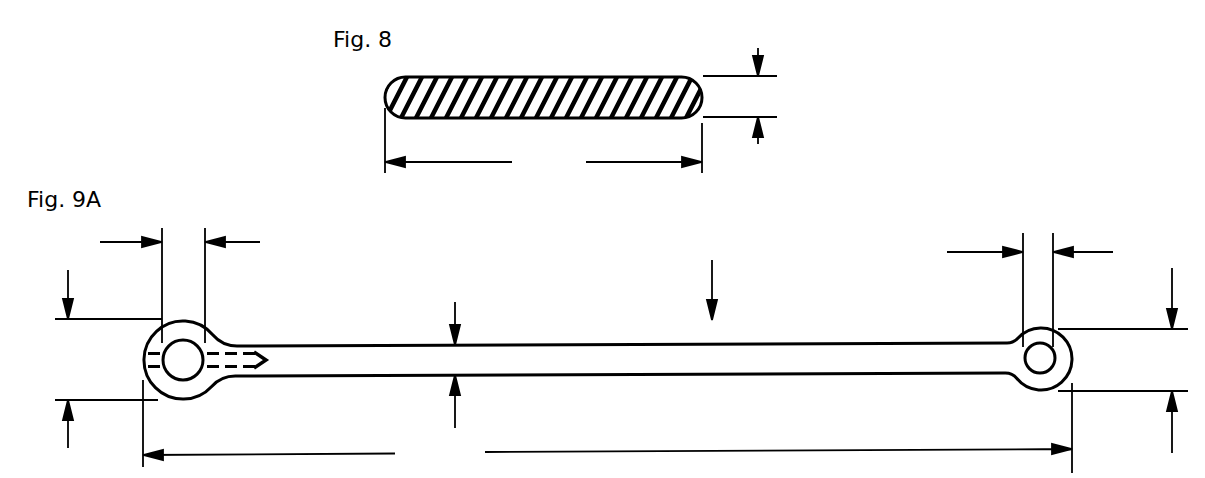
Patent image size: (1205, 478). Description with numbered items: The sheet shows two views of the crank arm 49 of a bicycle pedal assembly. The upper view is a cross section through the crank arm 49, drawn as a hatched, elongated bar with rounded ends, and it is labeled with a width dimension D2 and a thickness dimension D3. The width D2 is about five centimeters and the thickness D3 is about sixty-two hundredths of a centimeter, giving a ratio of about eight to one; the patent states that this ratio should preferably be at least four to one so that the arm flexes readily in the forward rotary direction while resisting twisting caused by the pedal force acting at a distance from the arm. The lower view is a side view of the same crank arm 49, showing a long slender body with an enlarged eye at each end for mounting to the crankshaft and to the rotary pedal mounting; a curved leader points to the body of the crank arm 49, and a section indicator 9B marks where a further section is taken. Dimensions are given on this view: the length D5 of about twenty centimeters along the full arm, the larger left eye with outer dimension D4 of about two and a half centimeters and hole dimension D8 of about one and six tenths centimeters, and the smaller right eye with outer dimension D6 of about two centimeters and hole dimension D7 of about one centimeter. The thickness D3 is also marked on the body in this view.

In FIG. 9A, the crank arm 49 is at (527, 345).
In FIG. 9A, the section line indicator for Fig. 9B is at (711, 274).
In FIG. 8, the width dimension D2 is at (543, 141).
In FIG. 8, the thickness dimension D3 is at (740, 96).
In FIG. 9A, the thickness dimension D3 is at (449, 348).
In FIG. 9A, the dimension D4 is at (107, 359).
In FIG. 9A, the length dimension D5 is at (607, 426).
In FIG. 9A, the dimension D6 is at (1123, 360).
In FIG. 9A, the dimension D7 is at (1008, 290).
In FIG. 9A, the dimension D8 is at (199, 285).